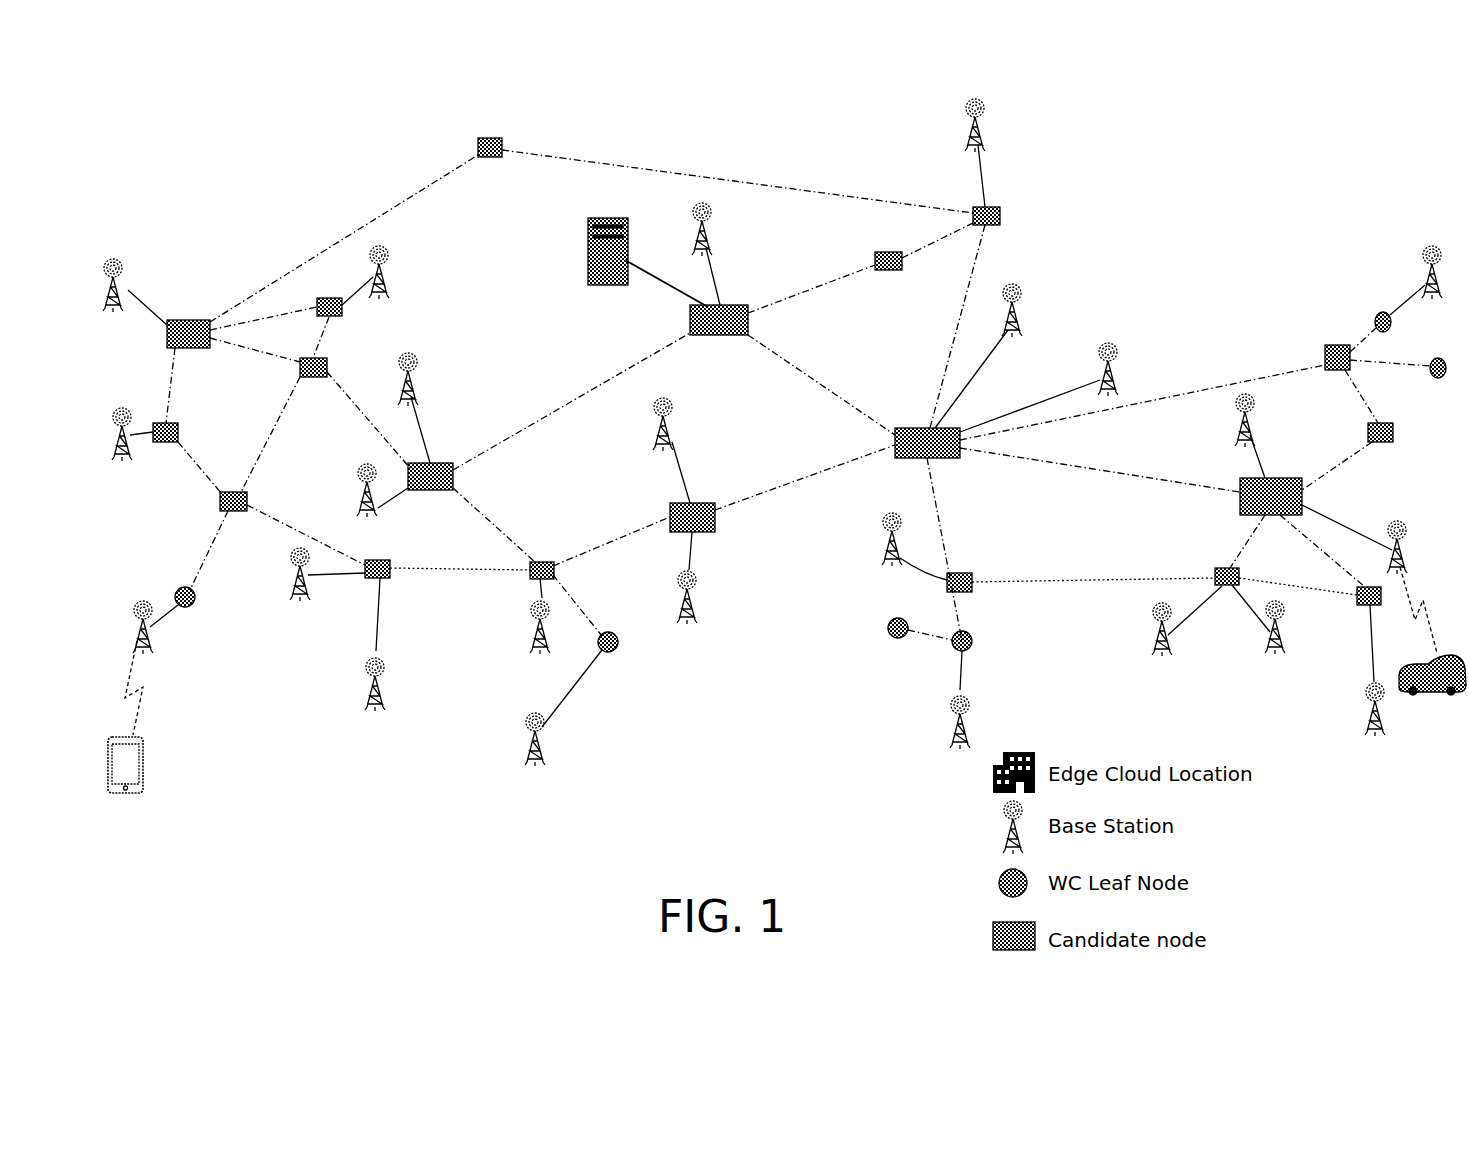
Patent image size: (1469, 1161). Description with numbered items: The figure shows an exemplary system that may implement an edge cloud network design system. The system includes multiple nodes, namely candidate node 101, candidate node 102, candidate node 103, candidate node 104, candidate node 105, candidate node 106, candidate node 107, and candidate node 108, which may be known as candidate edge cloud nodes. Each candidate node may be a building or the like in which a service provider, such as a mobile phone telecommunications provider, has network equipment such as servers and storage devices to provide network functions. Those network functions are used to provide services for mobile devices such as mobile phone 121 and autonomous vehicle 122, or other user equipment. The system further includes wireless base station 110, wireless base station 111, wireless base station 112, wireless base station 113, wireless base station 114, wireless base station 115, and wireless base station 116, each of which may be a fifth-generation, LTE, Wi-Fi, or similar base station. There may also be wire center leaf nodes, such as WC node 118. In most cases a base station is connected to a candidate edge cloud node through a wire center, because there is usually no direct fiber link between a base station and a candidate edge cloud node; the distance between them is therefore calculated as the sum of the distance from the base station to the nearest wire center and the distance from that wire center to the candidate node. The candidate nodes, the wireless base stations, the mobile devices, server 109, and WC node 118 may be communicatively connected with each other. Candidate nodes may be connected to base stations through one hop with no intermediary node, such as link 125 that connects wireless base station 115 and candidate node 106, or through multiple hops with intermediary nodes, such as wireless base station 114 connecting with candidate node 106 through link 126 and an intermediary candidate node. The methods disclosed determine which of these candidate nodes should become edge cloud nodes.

The candidate node 101 is at (188, 320).
The candidate node 102 is at (430, 463).
The candidate node 103 is at (722, 305).
The candidate node 104 is at (698, 503).
The candidate node 105 is at (915, 428).
The candidate node 106 is at (1275, 478).
The candidate node 107 is at (490, 138).
The candidate node 108 is at (1000, 215).
The server 109 is at (644, 277).
The wireless base station 110 is at (103, 307).
The wireless base station 111 is at (118, 457).
The wireless base station 112 is at (150, 650).
The wireless base station 113 is at (690, 620).
The wireless base station 114 is at (1280, 650).
The wireless base station 115 is at (1403, 552).
The wireless base station 116 is at (1015, 310).
The WC node 118 is at (972, 640).
The mobile phone 121 is at (120, 734).
The autonomous vehicle 122 is at (1245, 537).
The link 125 is at (1352, 528).
The link 126 is at (1243, 610).